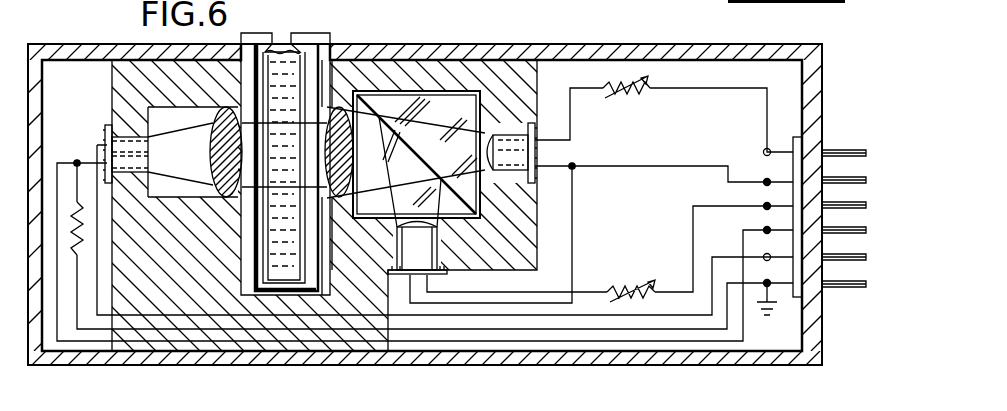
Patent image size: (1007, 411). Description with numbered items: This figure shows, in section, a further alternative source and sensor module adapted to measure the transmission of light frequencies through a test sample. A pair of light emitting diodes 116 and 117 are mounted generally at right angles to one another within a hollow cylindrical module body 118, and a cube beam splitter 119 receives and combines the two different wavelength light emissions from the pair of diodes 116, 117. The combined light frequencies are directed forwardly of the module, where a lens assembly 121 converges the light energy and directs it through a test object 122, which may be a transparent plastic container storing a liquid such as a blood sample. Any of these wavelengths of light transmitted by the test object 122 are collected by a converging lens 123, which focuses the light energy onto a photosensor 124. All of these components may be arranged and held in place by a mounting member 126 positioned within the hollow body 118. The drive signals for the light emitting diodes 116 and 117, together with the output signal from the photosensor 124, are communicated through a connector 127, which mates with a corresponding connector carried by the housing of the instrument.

The light emitting diode 116 is at (513, 140).
The light emitting diode 117 is at (425, 258).
The hollow cylindrical module body 118 is at (557, 46).
The cube beam splitter 119 is at (441, 97).
The lens assembly 121 is at (340, 112).
The test object 122 is at (302, 32).
The converging lens 123 is at (214, 118).
The photosensor 124 is at (118, 140).
The mounting member 126 is at (122, 82).
The connector 127 is at (852, 139).